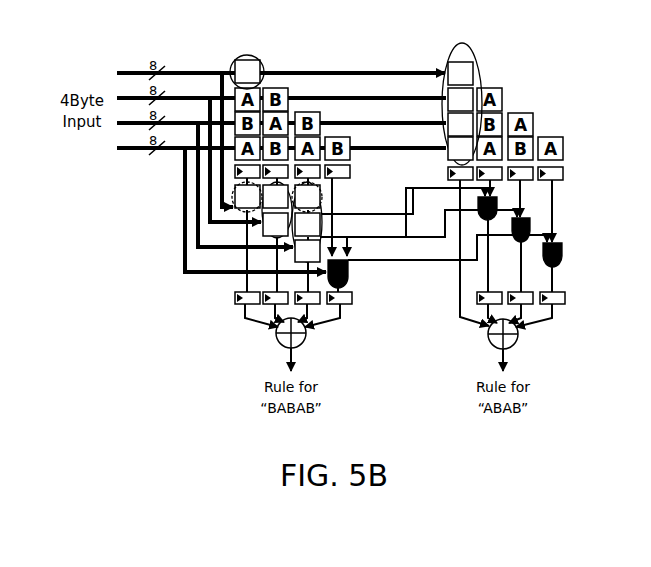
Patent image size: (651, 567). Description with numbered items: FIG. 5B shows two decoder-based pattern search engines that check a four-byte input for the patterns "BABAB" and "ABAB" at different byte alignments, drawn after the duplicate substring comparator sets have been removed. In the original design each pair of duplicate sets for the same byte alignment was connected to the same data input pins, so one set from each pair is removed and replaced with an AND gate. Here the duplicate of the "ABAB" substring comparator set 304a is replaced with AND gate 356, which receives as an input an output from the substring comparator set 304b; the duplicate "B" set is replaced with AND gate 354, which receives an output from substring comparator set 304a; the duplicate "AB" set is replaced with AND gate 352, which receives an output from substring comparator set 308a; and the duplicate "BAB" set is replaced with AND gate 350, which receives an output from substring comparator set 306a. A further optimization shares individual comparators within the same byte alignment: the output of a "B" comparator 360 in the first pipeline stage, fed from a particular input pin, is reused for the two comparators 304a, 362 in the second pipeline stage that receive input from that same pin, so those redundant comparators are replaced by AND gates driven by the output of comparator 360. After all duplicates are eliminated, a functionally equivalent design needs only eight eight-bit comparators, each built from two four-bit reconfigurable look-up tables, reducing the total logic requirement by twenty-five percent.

The "B" comparator 360 is at (259, 56).
The substring comparator set 304b is at (480, 62).
The substring comparator set 304a is at (230, 200).
The substring comparator set 308a is at (264, 234).
The substring comparator set 306a is at (292, 245).
The comparator 362 is at (334, 188).
The AND gate 356 is at (350, 272).
The AND gate 354 is at (499, 207).
The AND gate 352 is at (532, 226).
The AND gate 350 is at (562, 252).